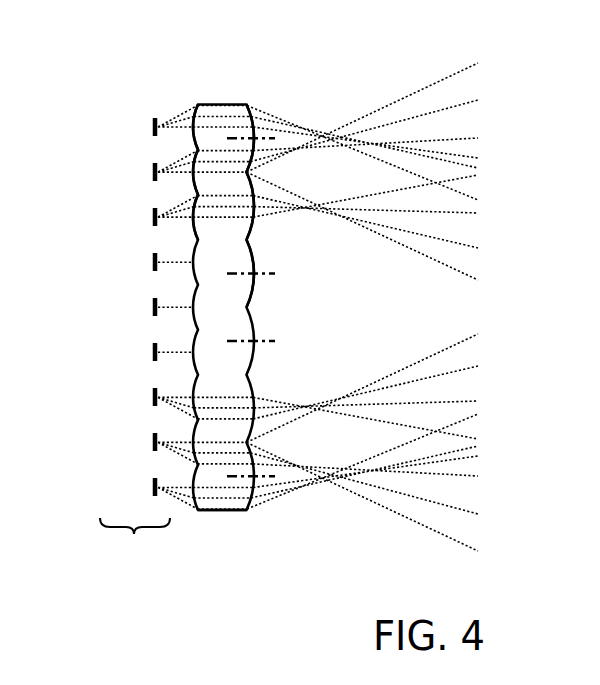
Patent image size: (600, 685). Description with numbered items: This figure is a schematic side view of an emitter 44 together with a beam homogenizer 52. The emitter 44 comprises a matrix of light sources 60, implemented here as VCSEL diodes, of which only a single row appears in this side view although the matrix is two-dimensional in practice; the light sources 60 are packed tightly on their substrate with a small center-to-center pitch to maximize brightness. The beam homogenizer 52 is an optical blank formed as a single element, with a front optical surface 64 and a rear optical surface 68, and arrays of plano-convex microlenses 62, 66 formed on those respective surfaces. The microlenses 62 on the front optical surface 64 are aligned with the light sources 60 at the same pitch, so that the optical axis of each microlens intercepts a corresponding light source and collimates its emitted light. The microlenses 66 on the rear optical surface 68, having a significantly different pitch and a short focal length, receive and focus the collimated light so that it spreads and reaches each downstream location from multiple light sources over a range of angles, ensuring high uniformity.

The emitter 44 is at (135, 541).
The beam homogenizer 52 is at (225, 511).
The light sources 60 is at (152, 128).
The microlenses 62 is at (197, 149).
The front optical surface 64 is at (176, 66).
The microlenses 66 is at (253, 118).
The rear optical surface 68 is at (282, 66).